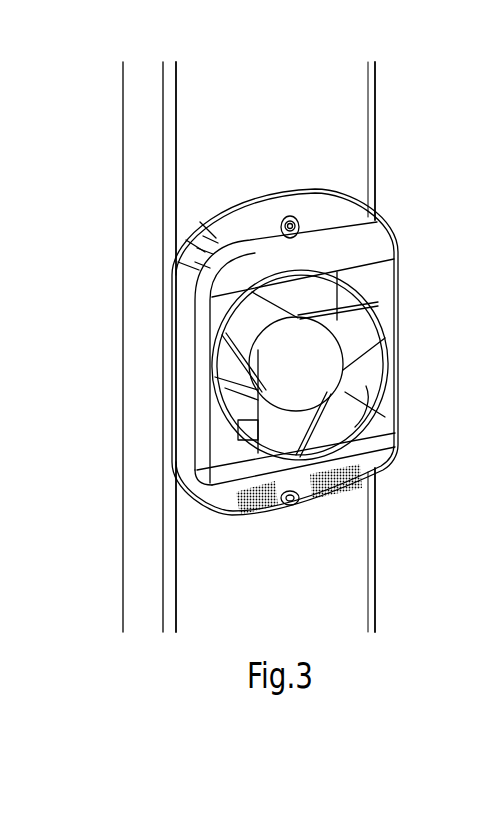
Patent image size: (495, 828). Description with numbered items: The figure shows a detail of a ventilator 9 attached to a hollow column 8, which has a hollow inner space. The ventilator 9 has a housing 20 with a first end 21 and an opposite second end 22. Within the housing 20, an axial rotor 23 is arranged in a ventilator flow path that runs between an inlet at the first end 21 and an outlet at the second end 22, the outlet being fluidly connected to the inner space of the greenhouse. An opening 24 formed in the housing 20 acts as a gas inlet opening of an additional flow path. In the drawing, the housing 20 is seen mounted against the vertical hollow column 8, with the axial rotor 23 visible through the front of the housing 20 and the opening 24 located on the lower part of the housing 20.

The hollow column 8 is at (346, 158).
The ventilator 9 is at (395, 285).
The housing 20 is at (380, 421).
The first end 21 is at (205, 315).
The second end 22 is at (173, 423).
The axial rotor 23 is at (272, 362).
The opening 24 is at (365, 486).